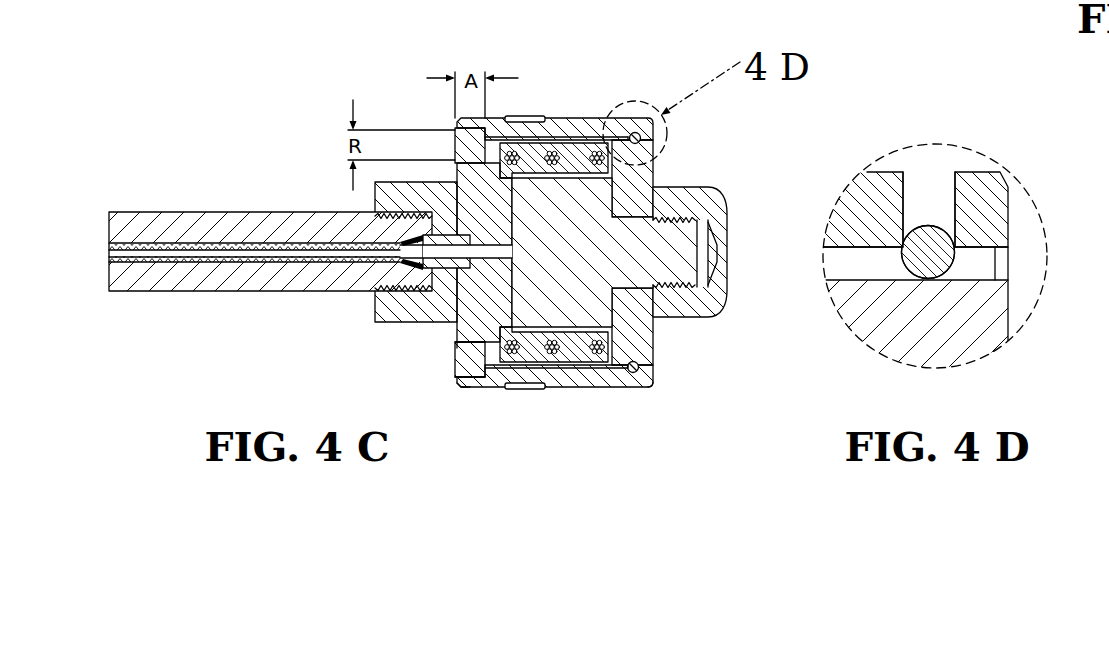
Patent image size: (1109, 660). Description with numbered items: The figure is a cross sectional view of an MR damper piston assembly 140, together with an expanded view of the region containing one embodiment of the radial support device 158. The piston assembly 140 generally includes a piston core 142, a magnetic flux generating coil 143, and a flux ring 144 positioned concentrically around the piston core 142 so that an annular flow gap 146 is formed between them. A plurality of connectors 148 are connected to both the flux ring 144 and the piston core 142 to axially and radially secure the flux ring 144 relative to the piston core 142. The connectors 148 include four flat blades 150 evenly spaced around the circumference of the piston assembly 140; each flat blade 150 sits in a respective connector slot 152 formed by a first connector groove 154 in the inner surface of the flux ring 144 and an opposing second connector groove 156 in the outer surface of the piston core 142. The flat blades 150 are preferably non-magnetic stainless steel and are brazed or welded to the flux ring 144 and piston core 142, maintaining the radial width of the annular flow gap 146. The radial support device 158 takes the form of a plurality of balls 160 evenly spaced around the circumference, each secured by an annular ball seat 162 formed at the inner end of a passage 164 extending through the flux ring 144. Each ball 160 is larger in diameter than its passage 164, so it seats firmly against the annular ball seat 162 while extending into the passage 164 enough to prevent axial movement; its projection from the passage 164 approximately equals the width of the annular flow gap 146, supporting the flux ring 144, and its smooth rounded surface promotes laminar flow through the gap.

In FIG. 4C, the piston assembly 140 is at (603, 108).
In FIG. 4C, the piston core 142 is at (597, 253).
In FIG. 4D, the piston core 142 is at (888, 343).
In FIG. 4C, the magnetic flux generating coil 143 is at (537, 148).
In FIG. 4C, the flux ring 144 is at (573, 128).
In FIG. 4D, the flux ring 144 is at (985, 178).
In FIG. 4C, the annular flow gap 146 is at (560, 366).
In FIG. 4D, the annular flow gap 146 is at (862, 258).
In FIG. 4C, the connectors 148 is at (446, 373).
In FIG. 4C, the flat blades 150 is at (480, 140).
In FIG. 4C, the connector slot 152 is at (446, 342).
In FIG. 4C, the first connector groove 154 is at (466, 390).
In FIG. 4C, the second connector groove 156 is at (455, 346).
In FIG. 4C, the radial support device 158 is at (644, 396).
In FIG. 4D, the radial support device 158 is at (975, 230).
In FIG. 4C, the balls 160 is at (640, 141).
In FIG. 4D, the balls 160 is at (913, 235).
In FIG. 4D, the annular ball seat 162 is at (955, 250).
In FIG. 4C, the passage 164 is at (636, 126).
In FIG. 4D, the passage 164 is at (922, 182).